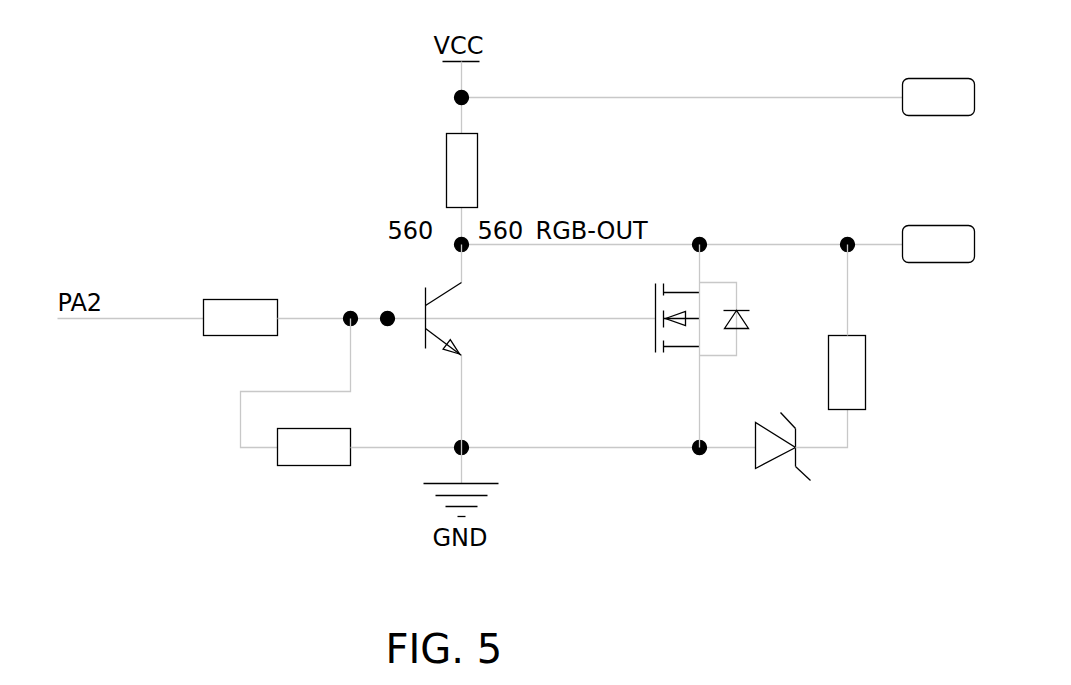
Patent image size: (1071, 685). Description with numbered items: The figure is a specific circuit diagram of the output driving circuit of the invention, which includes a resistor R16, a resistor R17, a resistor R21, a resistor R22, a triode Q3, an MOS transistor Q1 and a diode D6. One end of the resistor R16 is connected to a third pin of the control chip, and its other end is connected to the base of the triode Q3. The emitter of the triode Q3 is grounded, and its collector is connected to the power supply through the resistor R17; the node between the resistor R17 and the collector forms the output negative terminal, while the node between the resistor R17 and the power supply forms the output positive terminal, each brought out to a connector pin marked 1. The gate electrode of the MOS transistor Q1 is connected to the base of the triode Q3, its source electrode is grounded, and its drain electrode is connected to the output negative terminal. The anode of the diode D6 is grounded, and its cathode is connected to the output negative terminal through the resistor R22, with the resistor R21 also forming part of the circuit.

The resistor R16 is at (241, 288).
The resistor R17 is at (489, 171).
The resistor R21 is at (296, 392).
The resistor R22 is at (875, 338).
The triode Q3 is at (500, 364).
The MOS transistor Q1 is at (684, 346).
The diode D6 is at (782, 416).
The connector pin 1 is at (937, 139).